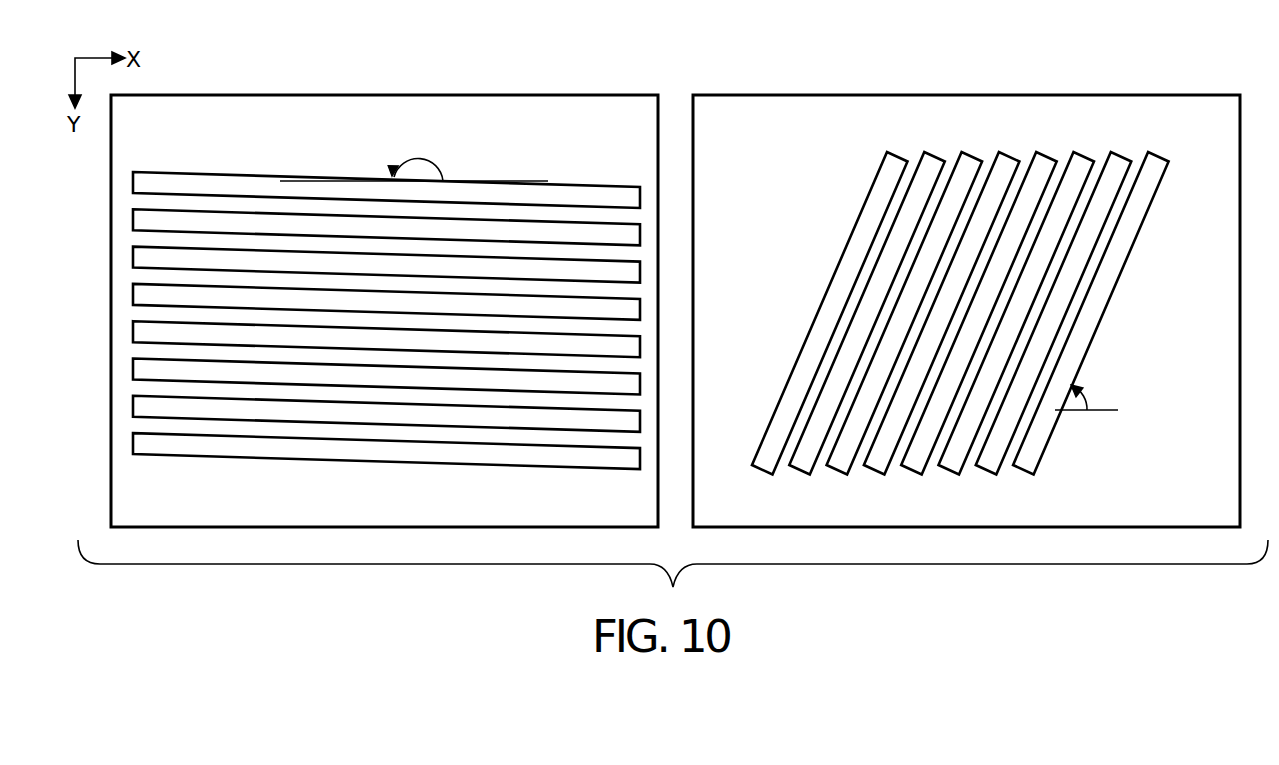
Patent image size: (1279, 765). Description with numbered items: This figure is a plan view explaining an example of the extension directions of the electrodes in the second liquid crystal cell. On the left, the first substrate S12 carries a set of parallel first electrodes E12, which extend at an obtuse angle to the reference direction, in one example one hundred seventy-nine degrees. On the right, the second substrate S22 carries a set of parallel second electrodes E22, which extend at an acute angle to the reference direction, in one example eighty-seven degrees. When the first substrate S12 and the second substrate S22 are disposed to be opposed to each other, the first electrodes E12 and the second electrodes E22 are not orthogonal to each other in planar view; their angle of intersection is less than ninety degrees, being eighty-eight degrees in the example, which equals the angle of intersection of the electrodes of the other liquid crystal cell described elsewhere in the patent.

The first substrate S12 is at (578, 95).
The first electrodes E12 is at (598, 192).
The second substrate S22 is at (1160, 95).
The second electrodes E22 is at (1132, 235).